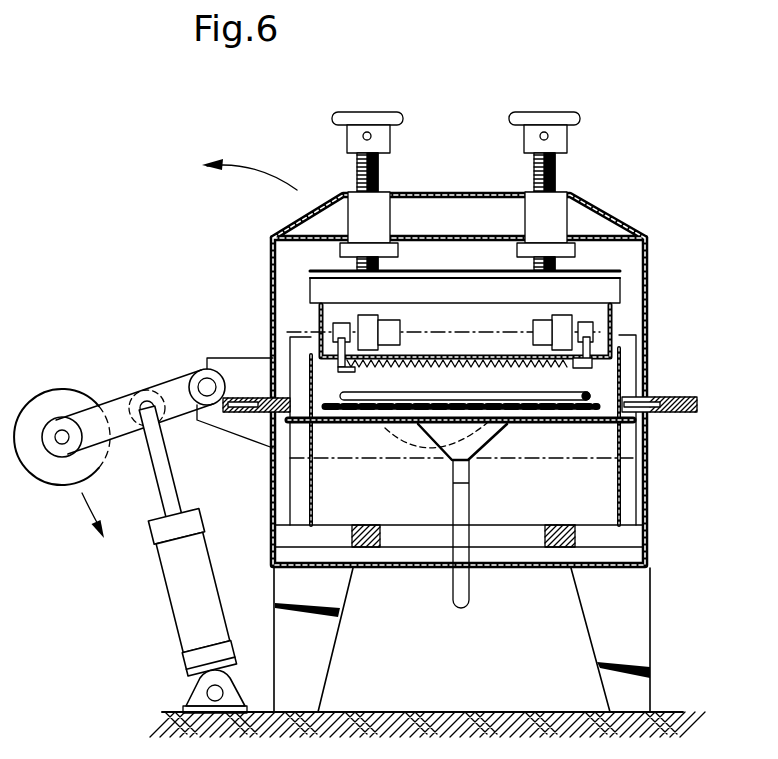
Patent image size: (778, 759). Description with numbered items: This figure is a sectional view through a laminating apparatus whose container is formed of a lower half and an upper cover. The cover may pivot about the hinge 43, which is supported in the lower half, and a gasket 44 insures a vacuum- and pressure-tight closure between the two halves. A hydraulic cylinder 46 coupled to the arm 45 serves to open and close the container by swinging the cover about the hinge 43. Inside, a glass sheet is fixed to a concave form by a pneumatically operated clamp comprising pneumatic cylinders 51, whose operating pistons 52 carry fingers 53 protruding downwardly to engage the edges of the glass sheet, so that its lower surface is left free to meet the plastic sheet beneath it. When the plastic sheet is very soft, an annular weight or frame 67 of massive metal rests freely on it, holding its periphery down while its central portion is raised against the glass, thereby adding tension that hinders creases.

The hinge 43 is at (204, 375).
The gasket 44 is at (693, 404).
The arm 45 is at (118, 399).
The hydraulic cylinder 46 is at (171, 601).
The pneumatic cylinders 51 is at (400, 332).
The operating pistons 52 is at (356, 323).
The fingers 53 is at (337, 350).
The annular weight or frame 67 is at (592, 398).